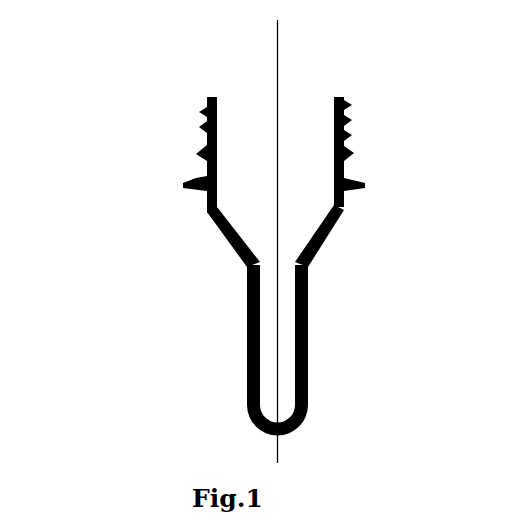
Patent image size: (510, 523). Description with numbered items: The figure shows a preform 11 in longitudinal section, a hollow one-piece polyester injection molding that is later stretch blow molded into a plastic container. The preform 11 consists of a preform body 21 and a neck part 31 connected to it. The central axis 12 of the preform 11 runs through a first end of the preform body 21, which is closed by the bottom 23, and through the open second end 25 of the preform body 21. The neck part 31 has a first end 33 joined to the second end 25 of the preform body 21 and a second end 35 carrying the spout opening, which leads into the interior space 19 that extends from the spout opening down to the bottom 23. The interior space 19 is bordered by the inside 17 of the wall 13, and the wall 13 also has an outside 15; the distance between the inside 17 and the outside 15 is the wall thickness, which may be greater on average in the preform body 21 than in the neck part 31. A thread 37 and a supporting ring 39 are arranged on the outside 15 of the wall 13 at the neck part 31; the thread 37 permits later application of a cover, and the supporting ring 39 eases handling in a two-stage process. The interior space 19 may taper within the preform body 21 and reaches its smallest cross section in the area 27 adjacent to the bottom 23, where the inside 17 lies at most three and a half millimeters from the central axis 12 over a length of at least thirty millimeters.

The preform 11 is at (248, 258).
The central axis 12 is at (278, 52).
The preform wall 13 is at (308, 310).
The outside of the wall 15 is at (247, 370).
The inside of the wall 17 is at (261, 369).
The interior space 19 is at (248, 212).
The preform body 21 is at (302, 323).
The bottom 23 is at (260, 433).
The second end of the preform body 25 is at (200, 195).
The area of the bottom 27 is at (300, 368).
The neck part 31 is at (248, 143).
The first end of the neck part 33 is at (114, 190).
The second end of the neck part 35 is at (205, 97).
The thread 37 is at (344, 108).
The supporting ring 39 is at (350, 177).